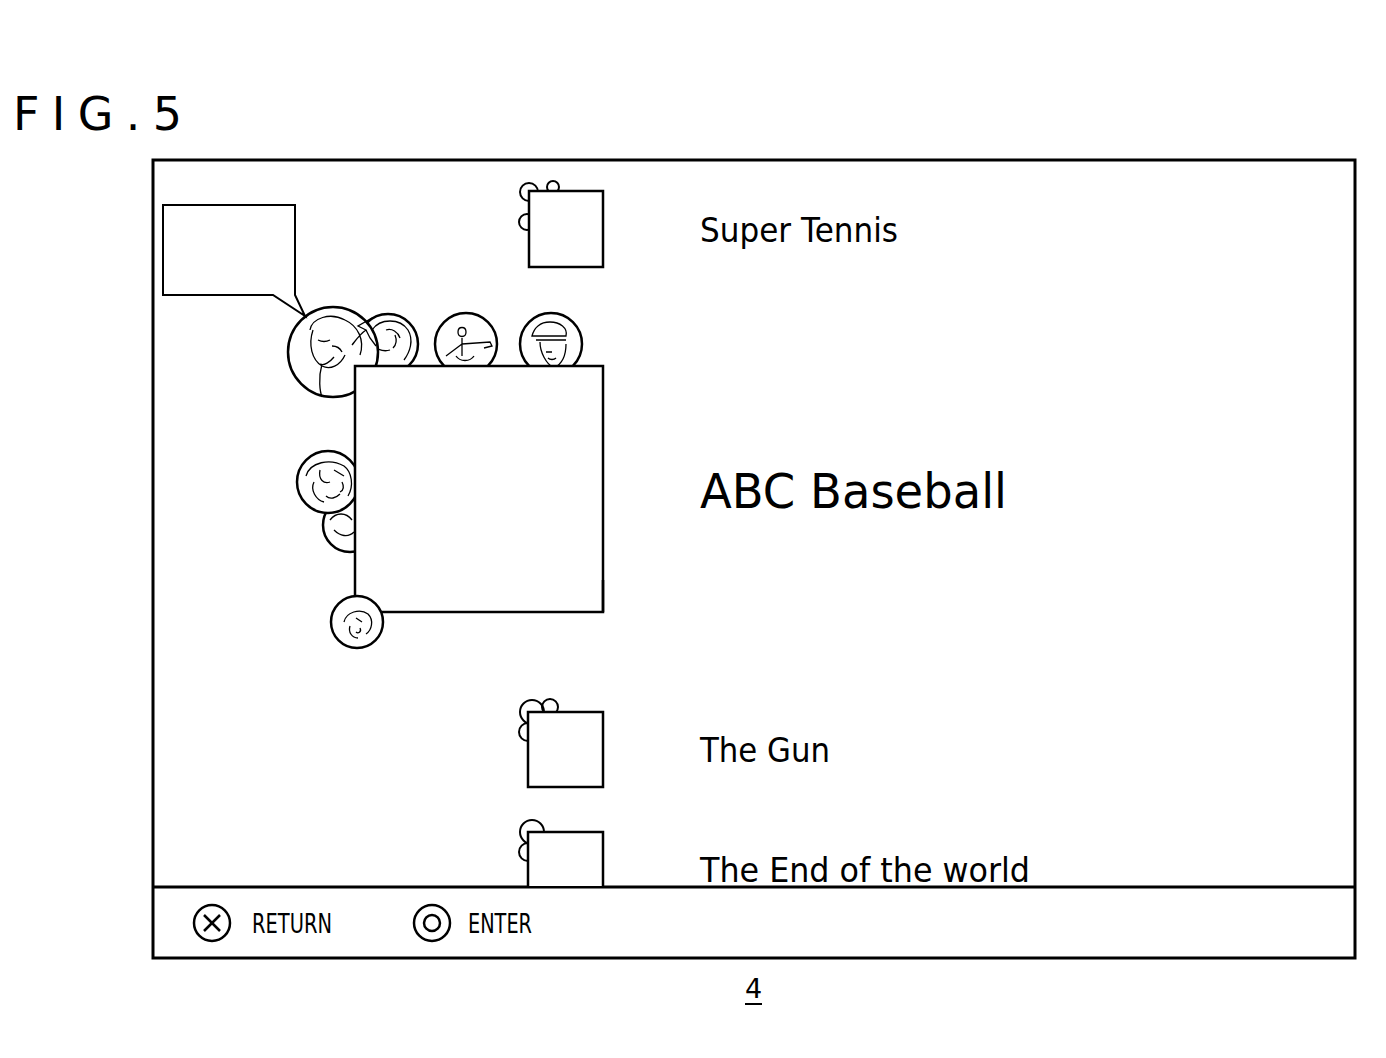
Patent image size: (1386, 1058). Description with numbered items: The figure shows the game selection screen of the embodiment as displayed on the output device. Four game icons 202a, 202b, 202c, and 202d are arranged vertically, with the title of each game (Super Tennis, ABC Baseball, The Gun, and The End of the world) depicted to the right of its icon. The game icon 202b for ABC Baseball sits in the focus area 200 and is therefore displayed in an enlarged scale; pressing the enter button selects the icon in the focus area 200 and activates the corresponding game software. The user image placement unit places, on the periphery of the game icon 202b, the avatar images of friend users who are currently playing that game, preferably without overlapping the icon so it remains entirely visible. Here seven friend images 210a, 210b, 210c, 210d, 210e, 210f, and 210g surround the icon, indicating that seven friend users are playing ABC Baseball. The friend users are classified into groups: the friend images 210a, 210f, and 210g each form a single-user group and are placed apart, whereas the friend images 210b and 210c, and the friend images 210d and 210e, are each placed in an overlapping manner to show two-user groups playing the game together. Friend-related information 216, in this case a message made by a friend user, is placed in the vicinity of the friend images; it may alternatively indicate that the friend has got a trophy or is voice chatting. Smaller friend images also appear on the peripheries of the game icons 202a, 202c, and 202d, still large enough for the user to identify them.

The focus area 200 is at (340, 426).
The game icon 202a is at (603, 250).
The game icon 202b is at (603, 600).
The game icon 202c is at (603, 725).
The game icon 202d is at (603, 845).
The friend image 210a is at (332, 625).
The friend image 210b is at (325, 535).
The friend image 210c is at (297, 485).
The friend image 210d is at (290, 352).
The friend image 210e is at (385, 314).
The friend image 210f is at (463, 313).
The friend image 210g is at (548, 313).
The friend-related information 216 is at (228, 205).